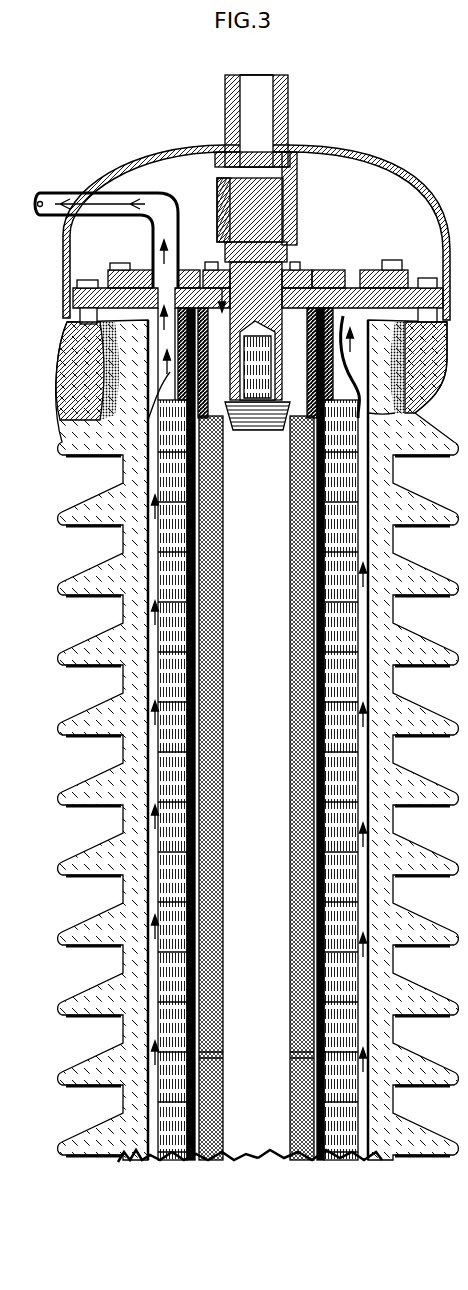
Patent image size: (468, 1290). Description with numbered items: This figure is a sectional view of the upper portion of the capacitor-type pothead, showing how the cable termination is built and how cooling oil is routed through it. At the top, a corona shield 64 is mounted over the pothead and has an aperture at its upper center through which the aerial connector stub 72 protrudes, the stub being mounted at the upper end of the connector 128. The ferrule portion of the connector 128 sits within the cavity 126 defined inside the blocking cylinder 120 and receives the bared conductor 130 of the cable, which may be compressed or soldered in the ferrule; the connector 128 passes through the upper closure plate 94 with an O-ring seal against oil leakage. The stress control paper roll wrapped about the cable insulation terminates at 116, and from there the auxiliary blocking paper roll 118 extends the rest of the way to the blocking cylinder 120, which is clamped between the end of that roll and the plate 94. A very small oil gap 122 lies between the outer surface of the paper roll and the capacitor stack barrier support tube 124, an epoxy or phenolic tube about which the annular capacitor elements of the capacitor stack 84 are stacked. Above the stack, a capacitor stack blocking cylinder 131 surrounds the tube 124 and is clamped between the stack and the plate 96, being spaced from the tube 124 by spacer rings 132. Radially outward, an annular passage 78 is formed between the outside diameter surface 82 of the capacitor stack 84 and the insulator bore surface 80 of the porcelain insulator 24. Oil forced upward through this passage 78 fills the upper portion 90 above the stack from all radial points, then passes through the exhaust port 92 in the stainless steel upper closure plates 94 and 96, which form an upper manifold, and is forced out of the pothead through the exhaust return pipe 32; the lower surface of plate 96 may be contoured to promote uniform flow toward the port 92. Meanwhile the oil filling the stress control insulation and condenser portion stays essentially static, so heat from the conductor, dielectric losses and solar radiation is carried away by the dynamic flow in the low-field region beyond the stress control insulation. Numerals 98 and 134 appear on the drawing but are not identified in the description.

The insulator 24 is at (428, 847).
The exhaust return pipe 32 is at (42, 216).
The corona shield 64 is at (356, 149).
The aerial connector stub 72 is at (289, 106).
The annular passage 78 is at (158, 1099).
The insulator bore surface 80 is at (162, 1162).
The outside diameter surface 82 is at (158, 1063).
The capacitor stack 84 is at (336, 1154).
The upper portion 90 is at (153, 333).
The exhaust port 92 is at (158, 270).
The upper closure plate 94 is at (354, 280).
The upper closure plate 96 is at (408, 287).
The gasket 98 is at (441, 318).
The termination of stress control paper roll 116 is at (220, 1053).
The auxiliary blocking paper roll 118 is at (222, 848).
The blocking cylinder 120 is at (315, 281).
The oil gap 122 is at (217, 410).
The capacitor stack barrier support tube 124 is at (190, 372).
The cavity 126 is at (187, 273).
The connector 128 is at (275, 212).
The bared conductor 130 is at (357, 368).
The capacitor stack blocking cylinder 131 is at (340, 390).
The spacer rings 132 is at (256, 385).
The shed 134 is at (318, 387).